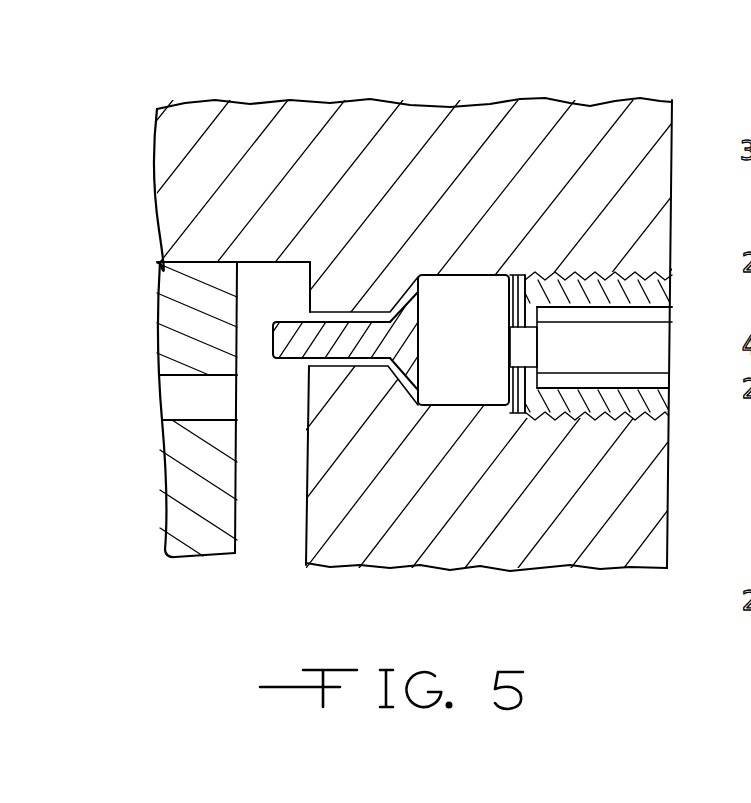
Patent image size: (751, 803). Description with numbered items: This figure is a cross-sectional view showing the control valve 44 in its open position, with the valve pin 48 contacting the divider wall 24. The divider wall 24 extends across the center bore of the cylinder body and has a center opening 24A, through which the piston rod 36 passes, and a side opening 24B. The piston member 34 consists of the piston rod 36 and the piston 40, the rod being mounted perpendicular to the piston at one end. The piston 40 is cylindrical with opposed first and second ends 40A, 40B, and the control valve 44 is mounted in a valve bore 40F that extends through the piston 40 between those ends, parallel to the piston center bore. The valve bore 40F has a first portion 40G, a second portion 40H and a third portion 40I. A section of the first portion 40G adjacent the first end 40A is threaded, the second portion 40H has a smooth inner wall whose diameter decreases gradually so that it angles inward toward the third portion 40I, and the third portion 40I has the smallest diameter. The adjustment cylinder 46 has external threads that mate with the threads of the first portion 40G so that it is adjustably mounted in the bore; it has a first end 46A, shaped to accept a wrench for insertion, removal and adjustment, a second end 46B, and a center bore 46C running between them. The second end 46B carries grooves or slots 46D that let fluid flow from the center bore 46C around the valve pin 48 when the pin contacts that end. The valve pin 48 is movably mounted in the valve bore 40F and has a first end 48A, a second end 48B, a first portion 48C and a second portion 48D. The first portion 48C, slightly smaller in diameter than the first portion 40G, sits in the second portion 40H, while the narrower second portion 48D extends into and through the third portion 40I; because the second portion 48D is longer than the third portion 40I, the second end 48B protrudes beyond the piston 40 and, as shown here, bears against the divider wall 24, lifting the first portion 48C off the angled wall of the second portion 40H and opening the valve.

The divider wall 24 is at (173, 522).
The center opening 24A is at (158, 263).
The side opening 24B is at (173, 401).
The piston member 34 is at (193, 116).
The piston rod 36 is at (173, 205).
The piston 40 is at (552, 553).
The first end 40A is at (672, 529).
The second end 40B is at (296, 514).
The valve bore 40F is at (420, 316).
The first portion 40G is at (594, 420).
The second portion 40H is at (420, 408).
The third portion 40I is at (261, 407).
The control valve 44 is at (522, 298).
The adjustment cylinder 46 is at (630, 418).
The first end 46A is at (633, 413).
The second end 46B is at (507, 385).
The center bore 46C is at (645, 340).
The grooves or slots 46D is at (520, 416).
The valve pin 48 is at (329, 332).
The first end 48A is at (458, 288).
The second end 48B is at (274, 328).
The first portion 48C is at (393, 383).
The second portion 48D is at (358, 357).